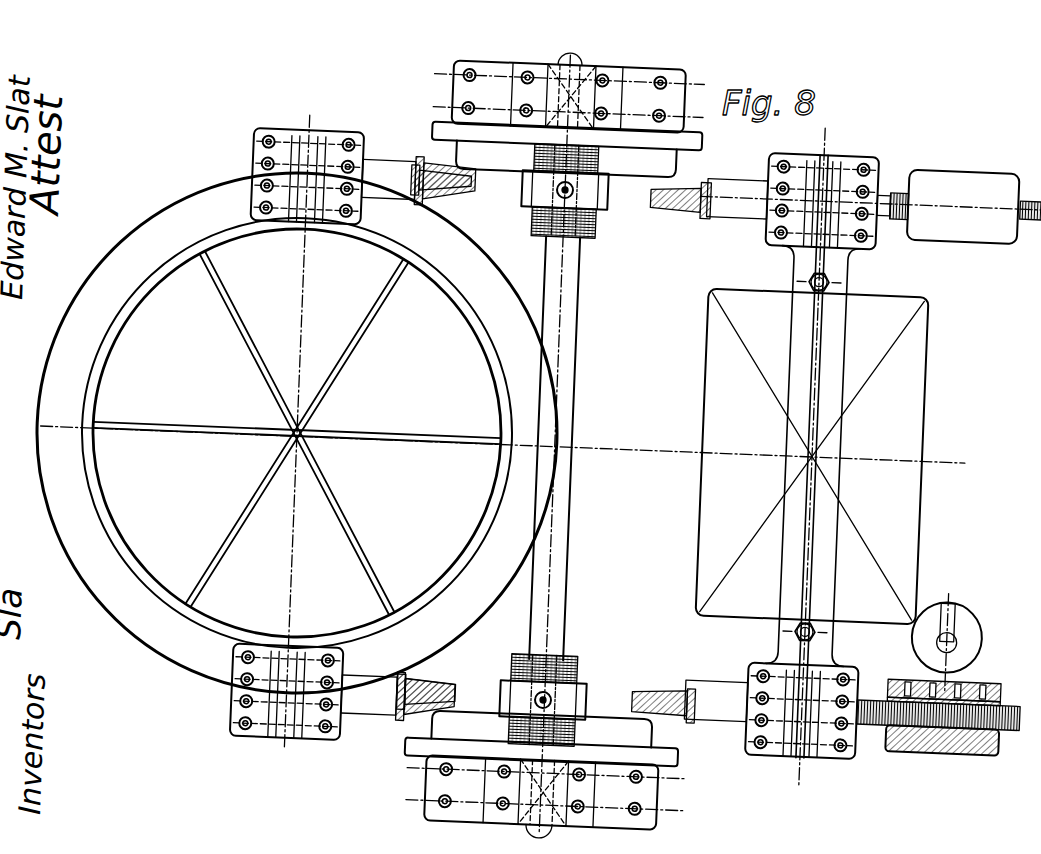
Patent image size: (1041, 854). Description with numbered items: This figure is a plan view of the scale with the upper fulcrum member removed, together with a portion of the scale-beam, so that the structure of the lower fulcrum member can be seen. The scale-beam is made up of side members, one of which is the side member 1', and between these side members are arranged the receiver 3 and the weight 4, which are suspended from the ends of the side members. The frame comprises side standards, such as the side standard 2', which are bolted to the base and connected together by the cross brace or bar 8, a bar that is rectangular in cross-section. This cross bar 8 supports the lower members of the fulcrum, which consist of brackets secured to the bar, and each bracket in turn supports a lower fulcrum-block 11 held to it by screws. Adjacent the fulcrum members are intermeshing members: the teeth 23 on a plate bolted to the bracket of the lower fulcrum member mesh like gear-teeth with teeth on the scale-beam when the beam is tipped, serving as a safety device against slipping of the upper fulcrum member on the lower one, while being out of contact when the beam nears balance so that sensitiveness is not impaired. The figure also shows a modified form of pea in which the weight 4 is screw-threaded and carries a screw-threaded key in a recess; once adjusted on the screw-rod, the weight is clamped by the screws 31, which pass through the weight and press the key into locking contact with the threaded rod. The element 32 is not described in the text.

The side member of the scale-beam 1' is at (737, 456).
The side standard of the frame 2' is at (546, 785).
The receiver 3 is at (97, 366).
The weight 4 is at (925, 440).
The cross brace or bar 8 is at (553, 567).
The lower fulcrum-block 11 is at (567, 658).
The teeth 23 is at (520, 697).
The screws 31 is at (907, 681).
The clamp block 32 is at (998, 703).